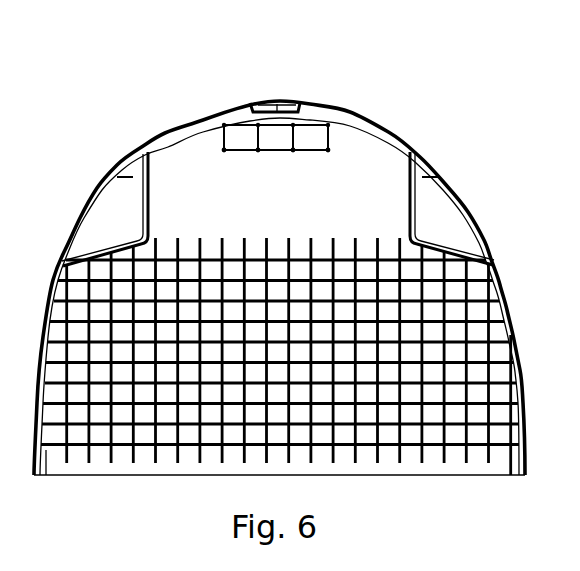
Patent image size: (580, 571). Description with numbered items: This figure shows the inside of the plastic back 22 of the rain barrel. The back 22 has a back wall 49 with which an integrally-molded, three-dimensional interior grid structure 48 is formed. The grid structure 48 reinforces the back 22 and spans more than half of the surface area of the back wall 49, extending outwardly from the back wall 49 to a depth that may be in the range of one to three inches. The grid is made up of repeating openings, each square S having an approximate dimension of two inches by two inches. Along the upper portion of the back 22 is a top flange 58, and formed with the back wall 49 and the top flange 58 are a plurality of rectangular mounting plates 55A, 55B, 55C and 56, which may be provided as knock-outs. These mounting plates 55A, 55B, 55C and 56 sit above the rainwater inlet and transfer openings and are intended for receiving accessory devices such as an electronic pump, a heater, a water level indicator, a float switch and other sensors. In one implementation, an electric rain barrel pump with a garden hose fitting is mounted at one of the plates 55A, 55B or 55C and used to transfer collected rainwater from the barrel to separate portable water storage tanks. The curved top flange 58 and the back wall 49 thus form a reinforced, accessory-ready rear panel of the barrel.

The plastic back 22 is at (352, 112).
The top flange 58 is at (176, 124).
The back wall 49 is at (289, 195).
The rectangular mounting plate 56 is at (275, 109).
The rectangular mounting plate 55A is at (232, 140).
The rectangular mounting plate 55B is at (281, 134).
The rectangular mounting plate 55C is at (313, 133).
The square S is at (192, 275).
The interior grid structure 48 is at (358, 285).